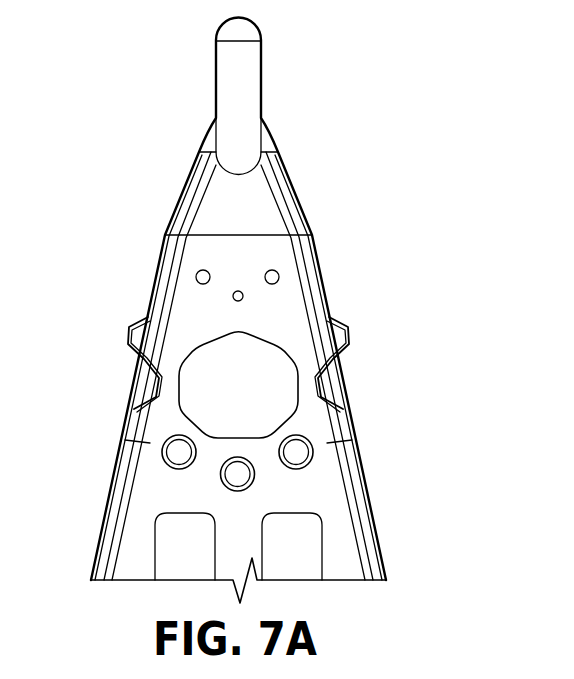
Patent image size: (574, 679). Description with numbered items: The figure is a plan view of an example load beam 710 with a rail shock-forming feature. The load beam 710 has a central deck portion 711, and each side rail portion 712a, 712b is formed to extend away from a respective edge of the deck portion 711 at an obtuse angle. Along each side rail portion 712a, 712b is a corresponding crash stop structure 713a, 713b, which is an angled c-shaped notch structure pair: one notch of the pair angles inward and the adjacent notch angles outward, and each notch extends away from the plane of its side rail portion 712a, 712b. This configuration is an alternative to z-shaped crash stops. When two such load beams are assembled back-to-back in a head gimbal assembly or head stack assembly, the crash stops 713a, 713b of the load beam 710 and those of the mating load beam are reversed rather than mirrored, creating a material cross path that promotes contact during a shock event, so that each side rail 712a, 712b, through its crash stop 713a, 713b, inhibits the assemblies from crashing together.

The load beam 710 is at (265, 191).
The deck portion 711 is at (293, 304).
The side rail portion 712a is at (165, 268).
The side rail portion 712b is at (308, 258).
The crash stop structure 713a is at (129, 357).
The crash stop structure 713b is at (347, 357).